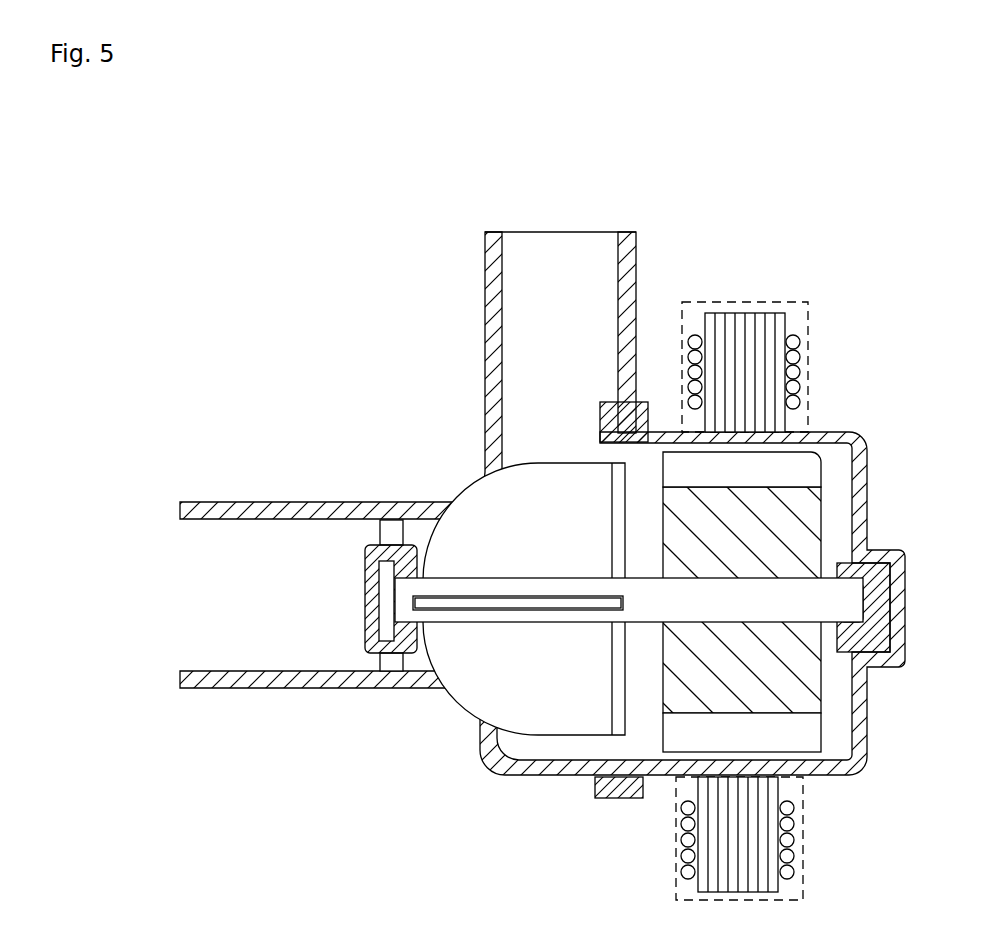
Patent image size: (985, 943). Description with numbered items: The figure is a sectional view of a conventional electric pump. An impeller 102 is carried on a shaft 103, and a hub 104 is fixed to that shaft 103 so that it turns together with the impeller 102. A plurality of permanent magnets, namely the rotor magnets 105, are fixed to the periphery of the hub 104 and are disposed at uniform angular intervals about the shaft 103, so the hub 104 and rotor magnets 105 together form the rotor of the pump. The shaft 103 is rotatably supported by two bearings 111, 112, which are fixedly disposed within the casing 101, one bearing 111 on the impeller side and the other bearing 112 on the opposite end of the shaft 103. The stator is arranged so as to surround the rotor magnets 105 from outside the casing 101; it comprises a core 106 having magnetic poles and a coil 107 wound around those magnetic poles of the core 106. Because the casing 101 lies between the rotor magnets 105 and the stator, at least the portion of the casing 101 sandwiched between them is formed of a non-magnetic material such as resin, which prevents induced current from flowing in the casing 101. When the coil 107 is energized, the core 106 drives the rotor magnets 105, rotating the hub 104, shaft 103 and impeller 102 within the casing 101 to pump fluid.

The casing 101 is at (455, 681).
The impeller 102 is at (560, 448).
The shaft 103 is at (653, 608).
The hub 104 is at (795, 545).
The rotor magnets 105 is at (810, 470).
The core 106 is at (757, 842).
The coil 107 is at (683, 360).
The bearing 111 is at (437, 565).
The bearing 112 is at (880, 588).